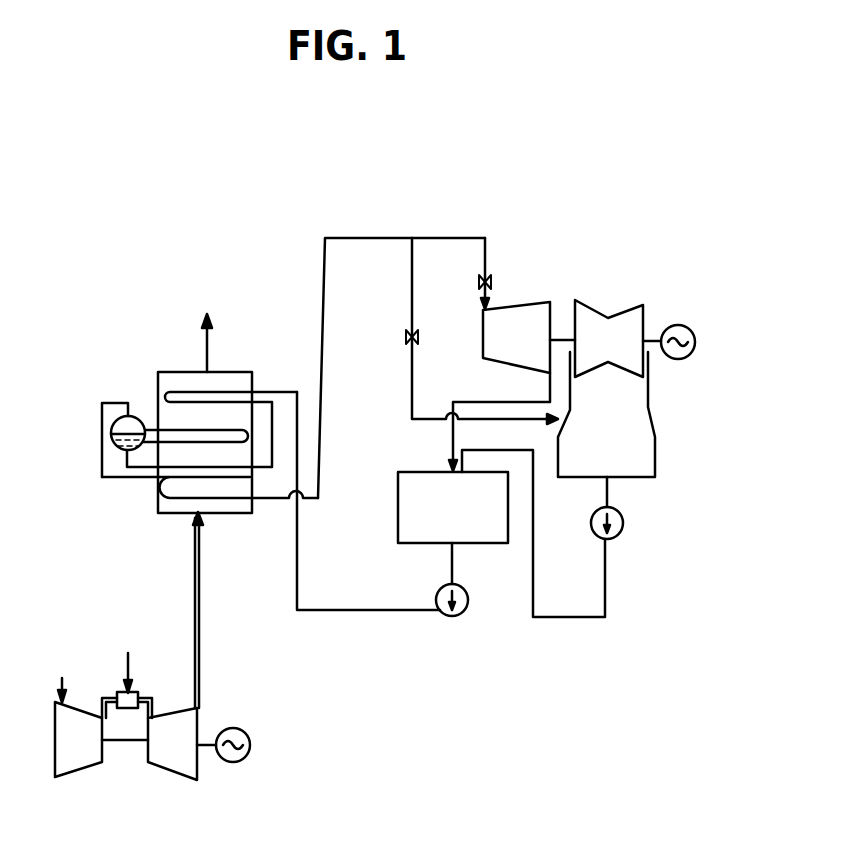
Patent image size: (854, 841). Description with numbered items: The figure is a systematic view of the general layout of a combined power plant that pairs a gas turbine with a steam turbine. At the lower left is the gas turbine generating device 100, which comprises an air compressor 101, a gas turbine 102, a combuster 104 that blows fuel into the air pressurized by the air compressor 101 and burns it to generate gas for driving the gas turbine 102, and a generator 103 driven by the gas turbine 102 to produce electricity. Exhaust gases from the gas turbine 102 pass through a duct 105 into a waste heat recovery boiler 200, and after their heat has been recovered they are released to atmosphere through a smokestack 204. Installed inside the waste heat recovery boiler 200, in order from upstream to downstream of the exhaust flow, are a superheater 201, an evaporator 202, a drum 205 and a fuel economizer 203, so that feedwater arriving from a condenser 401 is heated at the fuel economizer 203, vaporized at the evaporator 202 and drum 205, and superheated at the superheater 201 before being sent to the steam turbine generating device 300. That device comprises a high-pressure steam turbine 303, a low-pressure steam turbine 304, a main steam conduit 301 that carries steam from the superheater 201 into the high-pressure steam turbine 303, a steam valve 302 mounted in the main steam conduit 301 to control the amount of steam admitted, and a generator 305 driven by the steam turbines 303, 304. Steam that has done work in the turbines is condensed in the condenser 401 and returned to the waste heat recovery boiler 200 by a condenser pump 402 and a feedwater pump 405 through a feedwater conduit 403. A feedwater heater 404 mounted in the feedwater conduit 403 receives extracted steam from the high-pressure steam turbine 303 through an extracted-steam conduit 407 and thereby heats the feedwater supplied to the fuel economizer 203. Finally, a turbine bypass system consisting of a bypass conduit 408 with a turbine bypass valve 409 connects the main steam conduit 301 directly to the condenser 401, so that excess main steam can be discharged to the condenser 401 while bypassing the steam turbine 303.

The gas turbine generating device 100 is at (148, 793).
The air compressor 101 is at (73, 774).
The gas turbine 102 is at (177, 777).
The generator 103 is at (250, 746).
The combuster 104 is at (131, 668).
The duct 105 is at (200, 652).
The waste heat recovery boiler 200 is at (190, 349).
The superheater 201 is at (158, 499).
The evaporator 202 is at (186, 416).
The fuel economizer 203 is at (158, 392).
The smokestack 204 is at (210, 343).
The drum 205 is at (114, 444).
The steam turbine generating device 300 is at (620, 274).
The main steam conduit 301 is at (372, 238).
The steam valve 302 is at (488, 277).
The high-pressure steam turbine 303 is at (524, 306).
The low-pressure steam turbine 304 is at (609, 317).
The generator 305 is at (680, 325).
The condenser 401 is at (657, 450).
The condenser pump 402 is at (621, 531).
The feedwater conduit 403 is at (378, 612).
The feedwater heater 404 is at (397, 497).
The feedwater pump 405 is at (441, 590).
The extracted-steam conduit 407 is at (452, 441).
The bypass conduit 408 is at (411, 291).
The turbine bypass valve 409 is at (407, 338).